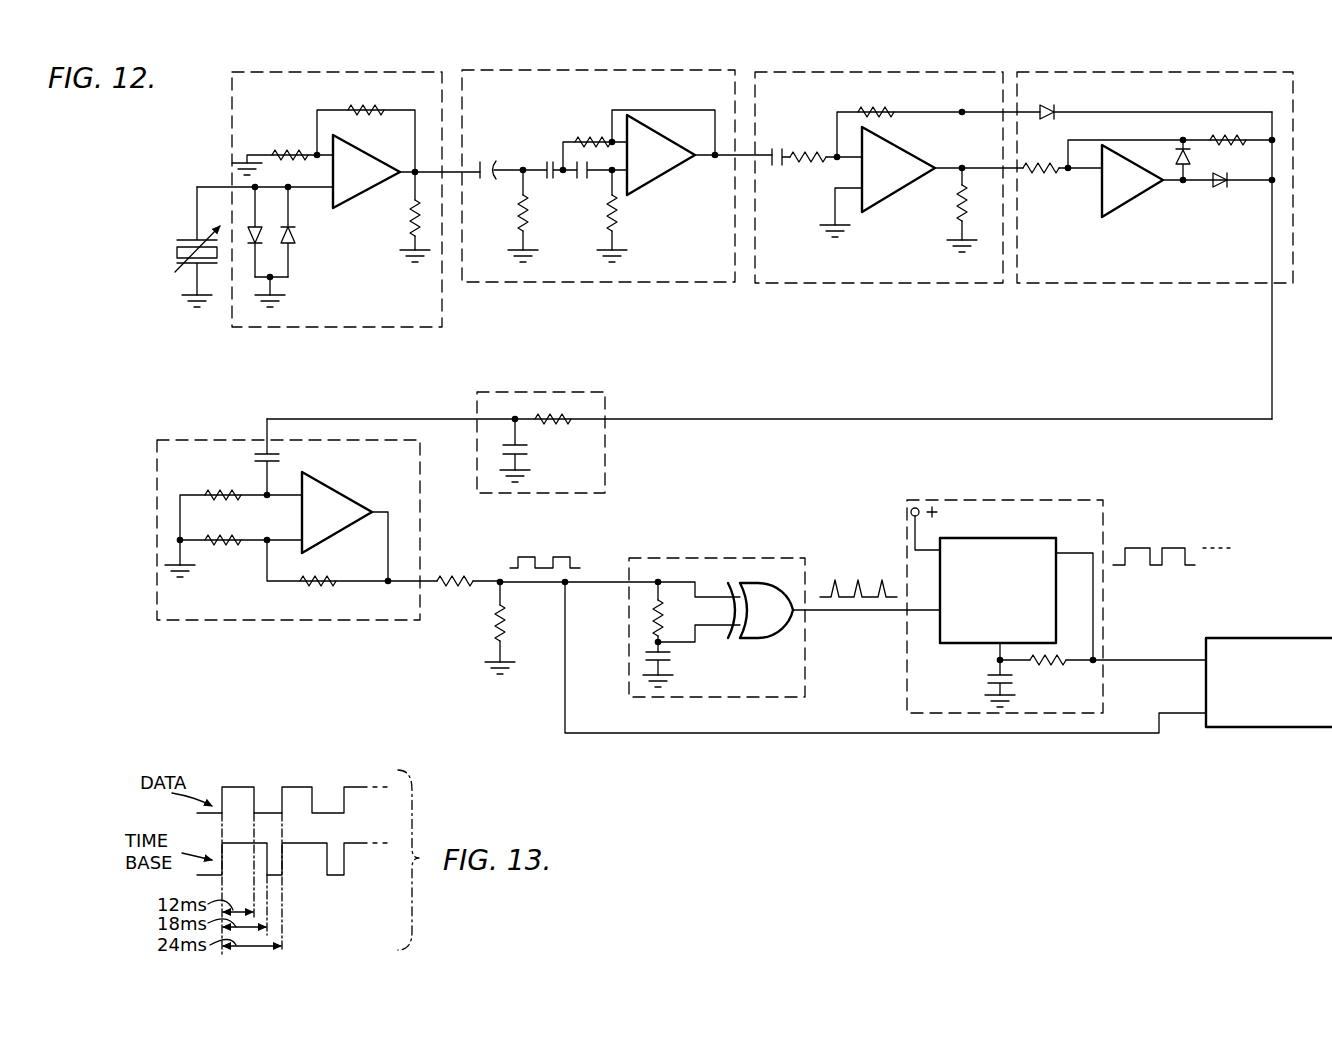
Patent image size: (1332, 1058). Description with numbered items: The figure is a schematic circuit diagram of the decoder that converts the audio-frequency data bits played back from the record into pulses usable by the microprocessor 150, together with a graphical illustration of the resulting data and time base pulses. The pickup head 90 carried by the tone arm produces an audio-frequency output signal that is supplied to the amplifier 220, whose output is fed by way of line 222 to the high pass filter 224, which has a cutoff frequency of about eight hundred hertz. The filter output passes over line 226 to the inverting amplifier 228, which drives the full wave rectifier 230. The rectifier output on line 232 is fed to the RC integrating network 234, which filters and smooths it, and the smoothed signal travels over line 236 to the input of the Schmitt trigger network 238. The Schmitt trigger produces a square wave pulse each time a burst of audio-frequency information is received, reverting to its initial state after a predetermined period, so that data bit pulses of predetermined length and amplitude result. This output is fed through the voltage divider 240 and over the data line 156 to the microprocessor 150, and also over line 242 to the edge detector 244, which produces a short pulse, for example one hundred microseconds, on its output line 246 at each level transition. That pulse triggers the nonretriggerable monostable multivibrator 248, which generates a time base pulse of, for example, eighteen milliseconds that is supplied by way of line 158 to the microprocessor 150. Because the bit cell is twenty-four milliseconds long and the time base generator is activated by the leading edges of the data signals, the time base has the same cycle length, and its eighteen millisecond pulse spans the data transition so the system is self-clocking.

The pickup head 90 is at (186, 238).
The microprocessor 150 is at (1276, 722).
The data line to microprocessor 156 is at (1100, 736).
The line 158 is at (1152, 660).
The amplifier 220 is at (322, 312).
The line 222 is at (452, 170).
The high pass filter 224 is at (565, 270).
The line 226 is at (748, 160).
The inverting amplifier 228 is at (867, 265).
The full wave rectifier 230 is at (1176, 265).
The line 232 is at (1270, 357).
The RC integrating network 234 is at (580, 461).
The line 236 is at (378, 419).
The Schmitt trigger network 238 is at (405, 520).
The voltage divider 240 is at (465, 600).
The line 242 is at (595, 578).
The edge detector 244 is at (790, 567).
The output line 246 is at (836, 612).
The nonretriggerable monostable multivibrator 248 is at (1090, 528).